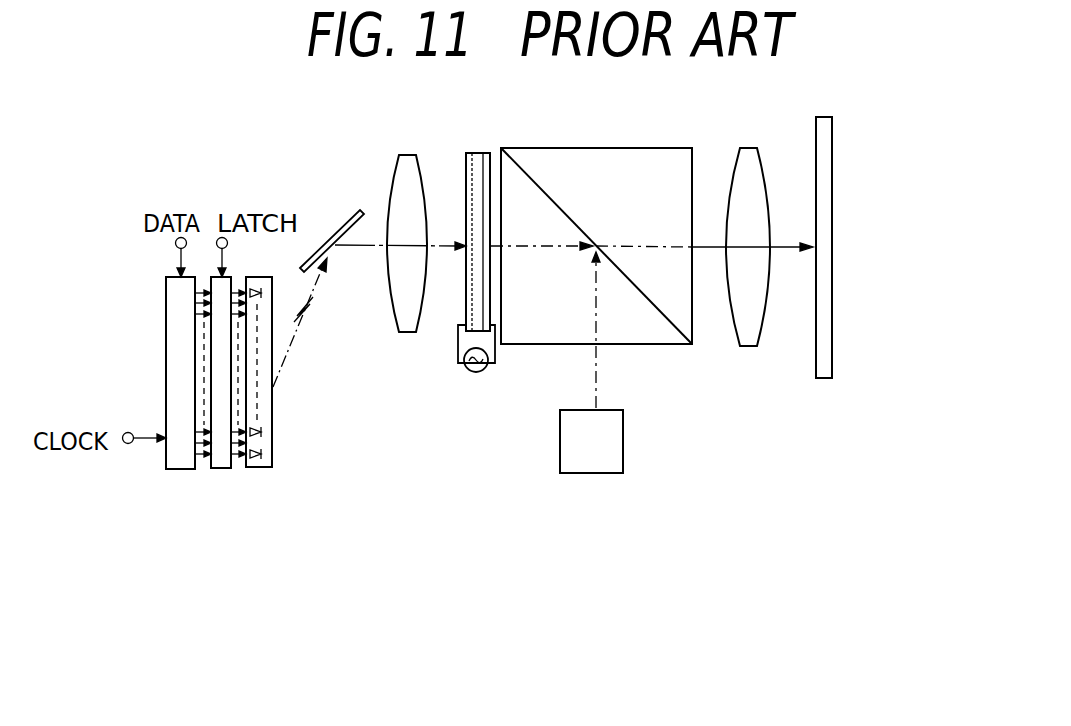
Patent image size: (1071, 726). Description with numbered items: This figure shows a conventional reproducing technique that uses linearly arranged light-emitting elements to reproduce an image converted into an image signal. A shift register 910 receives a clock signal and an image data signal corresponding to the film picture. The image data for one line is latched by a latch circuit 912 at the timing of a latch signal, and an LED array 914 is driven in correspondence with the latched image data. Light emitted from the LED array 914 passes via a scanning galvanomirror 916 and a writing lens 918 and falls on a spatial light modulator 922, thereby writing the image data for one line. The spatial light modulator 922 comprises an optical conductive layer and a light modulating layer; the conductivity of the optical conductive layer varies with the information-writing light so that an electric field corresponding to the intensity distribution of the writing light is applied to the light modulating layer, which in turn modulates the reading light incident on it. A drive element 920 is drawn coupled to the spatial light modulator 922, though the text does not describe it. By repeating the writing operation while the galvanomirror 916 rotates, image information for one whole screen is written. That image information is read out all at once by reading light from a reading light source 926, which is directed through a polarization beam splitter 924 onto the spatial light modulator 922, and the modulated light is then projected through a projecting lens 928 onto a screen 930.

The shift register 910 is at (177, 462).
The latch circuit 912 is at (222, 462).
The LED array 914 is at (267, 443).
The scanning galvanomirror 916 is at (333, 233).
The writing lens 918 is at (408, 162).
The drive voltage source 920 is at (477, 374).
The spatial light modulator 922 is at (480, 162).
The polarization beam splitter 924 is at (665, 337).
The reading light source 926 is at (617, 458).
The projecting lens 928 is at (749, 162).
The screen 930 is at (828, 138).